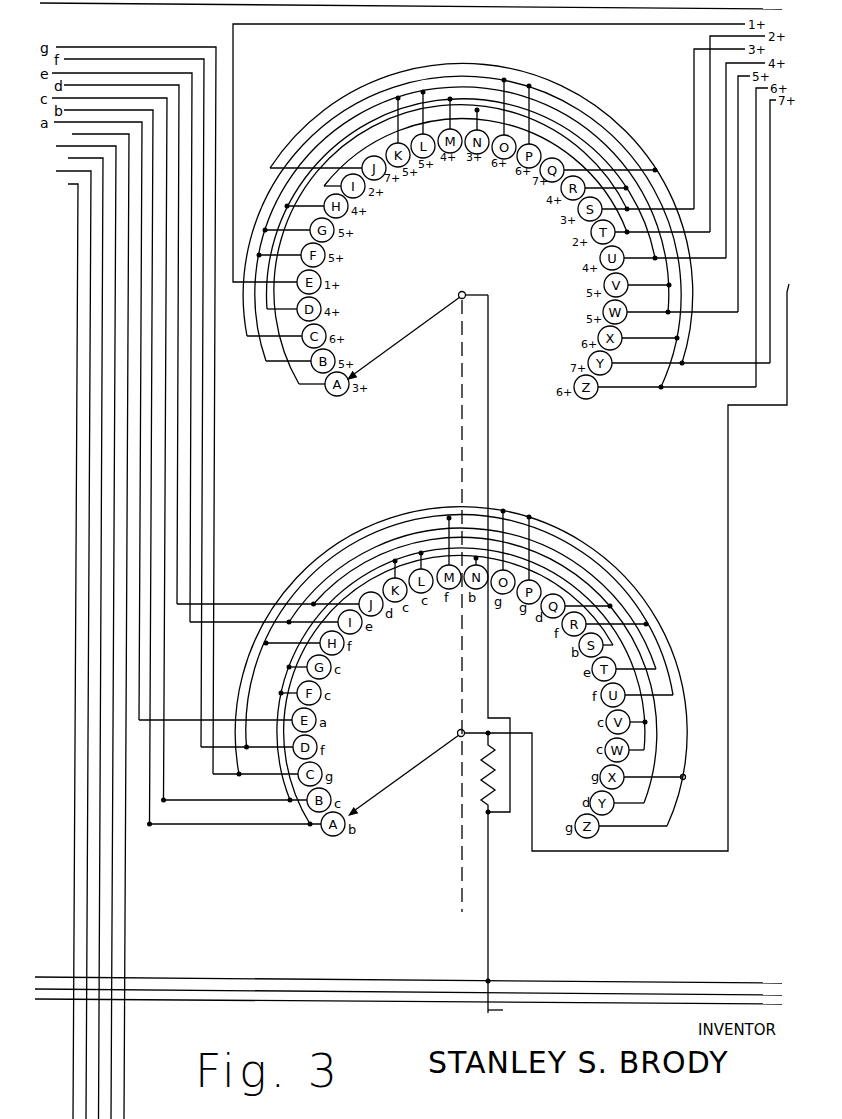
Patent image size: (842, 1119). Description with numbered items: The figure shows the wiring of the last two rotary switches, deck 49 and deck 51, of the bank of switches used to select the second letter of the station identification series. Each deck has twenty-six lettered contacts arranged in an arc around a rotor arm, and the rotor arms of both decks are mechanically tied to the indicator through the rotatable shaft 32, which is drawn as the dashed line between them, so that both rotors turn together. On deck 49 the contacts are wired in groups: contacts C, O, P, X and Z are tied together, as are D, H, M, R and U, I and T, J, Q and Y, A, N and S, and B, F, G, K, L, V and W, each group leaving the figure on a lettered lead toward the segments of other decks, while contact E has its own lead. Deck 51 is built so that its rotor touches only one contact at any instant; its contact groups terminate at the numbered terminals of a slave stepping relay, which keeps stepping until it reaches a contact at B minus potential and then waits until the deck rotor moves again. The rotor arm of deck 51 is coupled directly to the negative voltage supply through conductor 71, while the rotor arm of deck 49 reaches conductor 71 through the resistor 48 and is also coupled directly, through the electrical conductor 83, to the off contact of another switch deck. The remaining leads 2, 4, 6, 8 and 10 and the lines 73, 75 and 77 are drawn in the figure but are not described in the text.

The conductor line 2 is at (66, 648).
The terminal of stepping relay 4 is at (66, 641).
The conductor line 6 is at (78, 635).
The conductor line 8 is at (78, 629).
The conductor line 10 is at (90, 623).
The rotatable shaft 32 is at (461, 897).
The resistor 48 is at (485, 790).
The deck 49 is at (406, 757).
The deck 51 is at (428, 537).
The conductor 71 is at (738, 982).
The bus line 73 is at (697, 994).
The bus line 75 is at (650, 1002).
The top conductor line 77 is at (118, 4).
The electrical conductor 83 is at (629, 559).